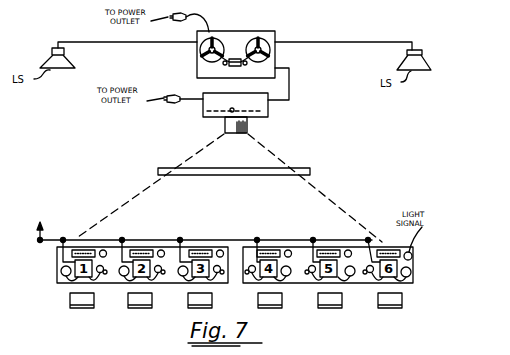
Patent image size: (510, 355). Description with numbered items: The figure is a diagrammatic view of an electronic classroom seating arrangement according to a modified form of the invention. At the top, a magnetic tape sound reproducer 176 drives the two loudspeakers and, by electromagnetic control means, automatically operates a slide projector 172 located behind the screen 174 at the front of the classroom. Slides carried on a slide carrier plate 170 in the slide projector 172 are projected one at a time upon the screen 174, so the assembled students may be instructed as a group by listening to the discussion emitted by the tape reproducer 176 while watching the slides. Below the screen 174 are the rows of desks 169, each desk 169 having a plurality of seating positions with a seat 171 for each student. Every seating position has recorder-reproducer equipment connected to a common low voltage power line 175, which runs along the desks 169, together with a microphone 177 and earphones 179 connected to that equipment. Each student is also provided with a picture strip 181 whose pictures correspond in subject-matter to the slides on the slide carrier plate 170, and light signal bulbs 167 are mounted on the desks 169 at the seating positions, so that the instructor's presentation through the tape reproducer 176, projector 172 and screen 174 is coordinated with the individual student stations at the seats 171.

The magnetic tape sound reproducer 176 is at (197, 60).
The slide projector 172 is at (268, 114).
The slide carrier plate 170 is at (206, 119).
The screen 174 is at (268, 176).
The low voltage power line 175 is at (210, 240).
The picture strip 181 is at (277, 251).
The earphones 179 is at (366, 265).
The light signal bulb 167 is at (412, 258).
The microphone 177 is at (411, 272).
The desk 169 is at (413, 283).
The seat 171 is at (402, 300).